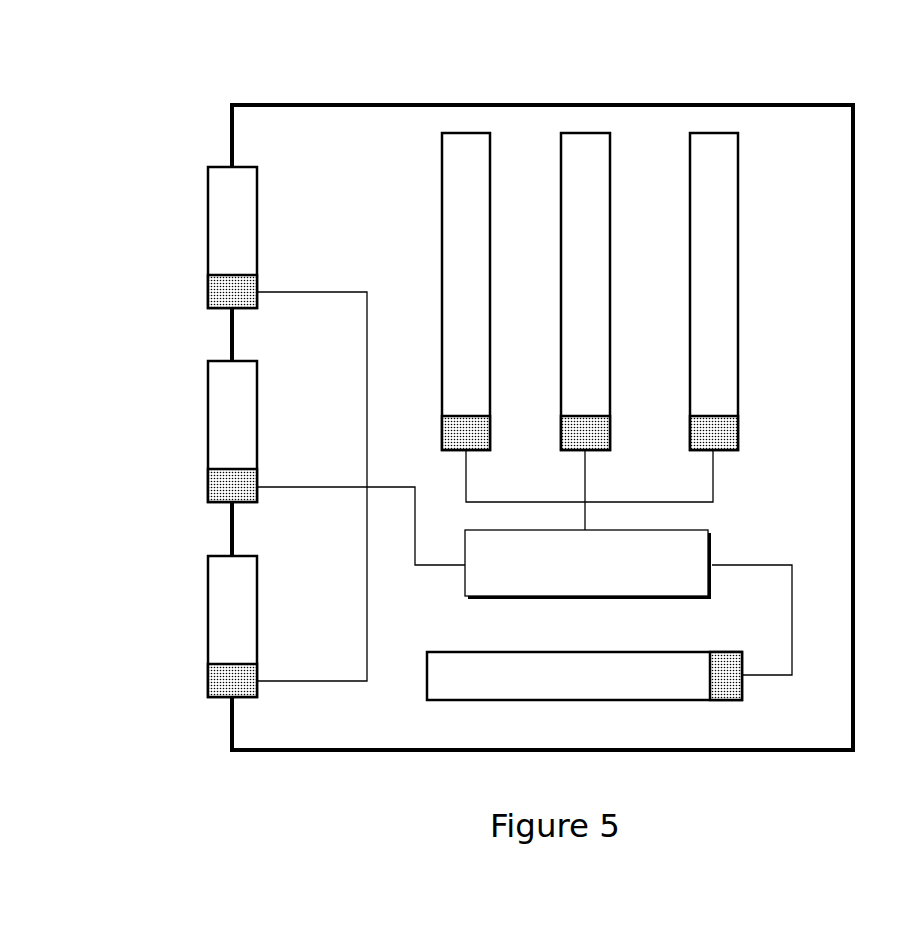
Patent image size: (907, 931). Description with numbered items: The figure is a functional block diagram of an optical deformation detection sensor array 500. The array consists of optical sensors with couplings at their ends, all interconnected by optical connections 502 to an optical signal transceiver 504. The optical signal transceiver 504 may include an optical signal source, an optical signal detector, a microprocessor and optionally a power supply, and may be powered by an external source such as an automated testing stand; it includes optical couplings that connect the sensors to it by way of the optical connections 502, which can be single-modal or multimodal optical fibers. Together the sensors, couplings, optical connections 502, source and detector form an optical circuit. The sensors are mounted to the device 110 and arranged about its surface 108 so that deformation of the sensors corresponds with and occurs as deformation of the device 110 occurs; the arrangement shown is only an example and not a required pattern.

The optical deformation detection sensor array 500 is at (498, 392).
The surface 108 is at (838, 320).
The device 110 is at (542, 733).
The optical connection 502 is at (313, 683).
The optical signal transceiver 504 is at (588, 564).